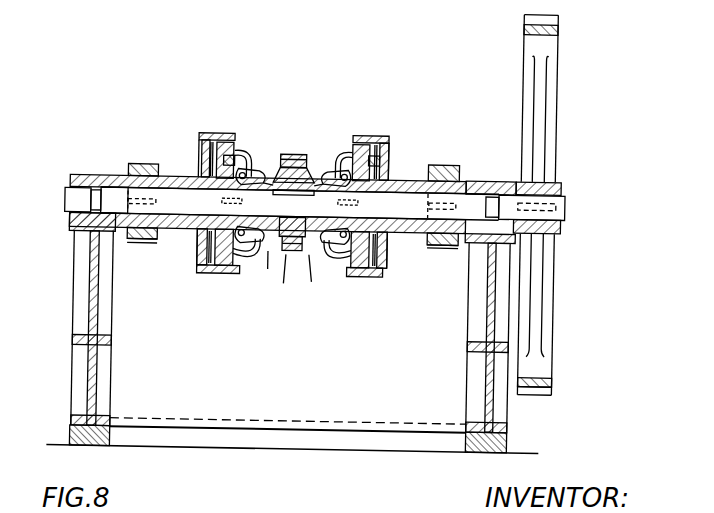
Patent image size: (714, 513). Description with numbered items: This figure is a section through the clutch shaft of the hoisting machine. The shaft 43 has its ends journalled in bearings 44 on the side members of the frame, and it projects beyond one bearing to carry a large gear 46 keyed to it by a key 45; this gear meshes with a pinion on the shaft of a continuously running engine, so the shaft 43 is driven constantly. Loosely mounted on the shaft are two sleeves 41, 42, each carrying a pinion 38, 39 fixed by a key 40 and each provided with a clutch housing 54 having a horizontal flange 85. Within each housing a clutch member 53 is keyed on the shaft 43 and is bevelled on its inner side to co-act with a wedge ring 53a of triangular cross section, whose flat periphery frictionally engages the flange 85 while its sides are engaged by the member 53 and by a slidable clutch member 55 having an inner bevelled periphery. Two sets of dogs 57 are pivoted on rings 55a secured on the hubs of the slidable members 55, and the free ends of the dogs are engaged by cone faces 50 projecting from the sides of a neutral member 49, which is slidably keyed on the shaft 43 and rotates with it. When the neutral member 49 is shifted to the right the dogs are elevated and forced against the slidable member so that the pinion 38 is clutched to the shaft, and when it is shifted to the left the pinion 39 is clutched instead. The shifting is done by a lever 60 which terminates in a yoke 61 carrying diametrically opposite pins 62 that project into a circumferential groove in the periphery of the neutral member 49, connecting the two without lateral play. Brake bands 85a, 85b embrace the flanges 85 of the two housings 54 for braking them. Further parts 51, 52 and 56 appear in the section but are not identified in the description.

The pinion 38 is at (456, 165).
The pinion 39 is at (136, 179).
The key 40 is at (118, 183).
The sleeve 41 is at (422, 184).
The sleeve 42 is at (152, 168).
The shaft 43 is at (70, 200).
The bearing 44 is at (94, 222).
The key 45 is at (562, 206).
The large gear 46 is at (550, 108).
The neutral member 49 is at (276, 168).
The cone faces 50 is at (284, 284).
The arm 51 is at (238, 148).
The plate 52 is at (380, 161).
The clutch member 53 is at (199, 142).
The wedge ring 53a is at (364, 277).
The clutch housing 54 is at (200, 148).
The slidable clutch member 55 is at (250, 156).
The ring 55a is at (290, 199).
The pawl arm 56 is at (240, 248).
The dogs 57 is at (322, 172).
The lever 60 is at (296, 252).
The yoke 61 is at (287, 170).
The pins 62 is at (294, 155).
The flange 85 is at (213, 135).
The brake band 85a is at (220, 135).
The brake band 85b is at (360, 135).